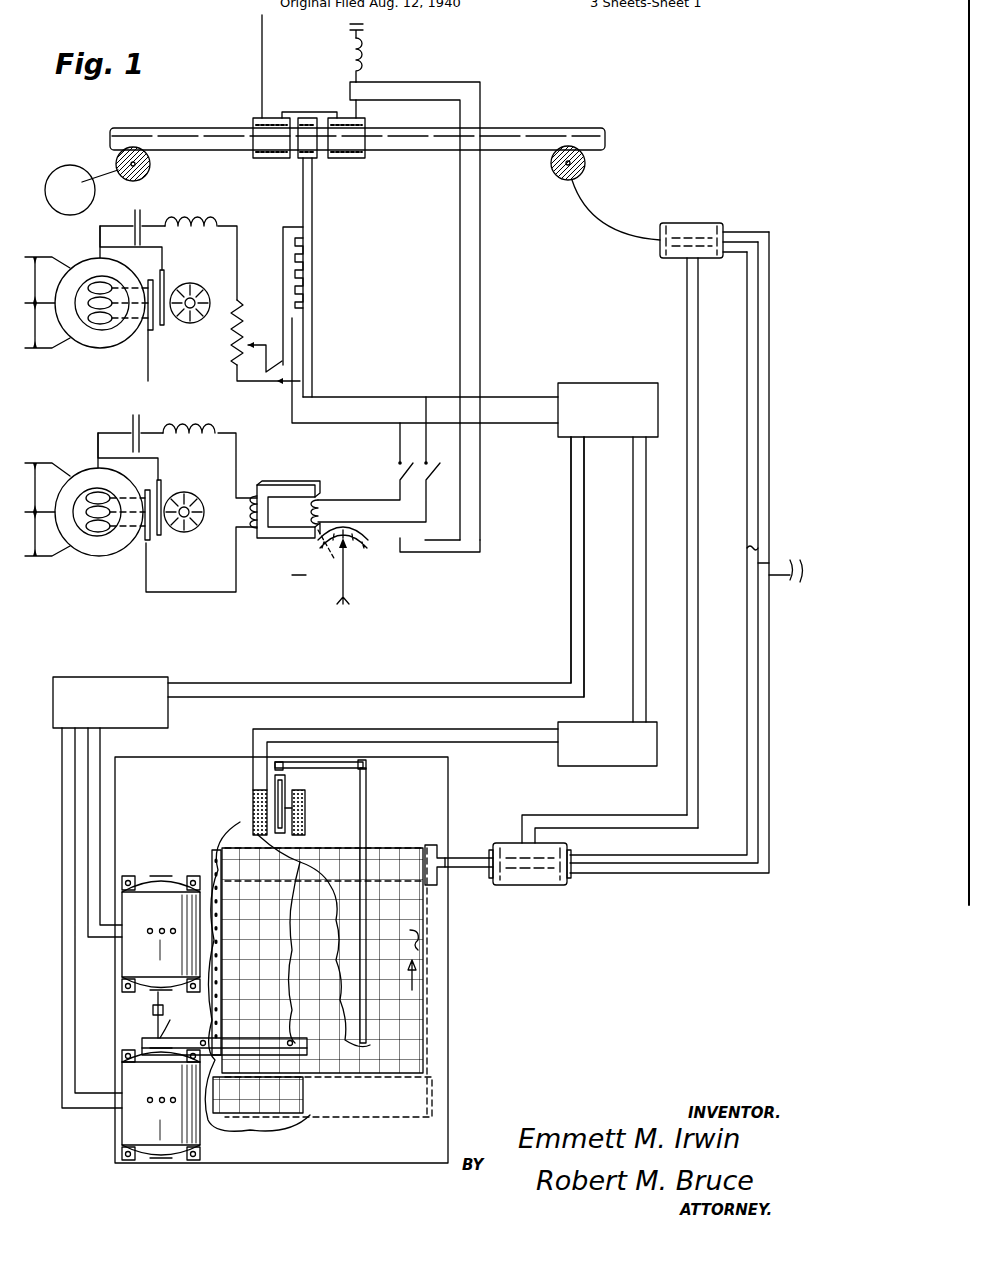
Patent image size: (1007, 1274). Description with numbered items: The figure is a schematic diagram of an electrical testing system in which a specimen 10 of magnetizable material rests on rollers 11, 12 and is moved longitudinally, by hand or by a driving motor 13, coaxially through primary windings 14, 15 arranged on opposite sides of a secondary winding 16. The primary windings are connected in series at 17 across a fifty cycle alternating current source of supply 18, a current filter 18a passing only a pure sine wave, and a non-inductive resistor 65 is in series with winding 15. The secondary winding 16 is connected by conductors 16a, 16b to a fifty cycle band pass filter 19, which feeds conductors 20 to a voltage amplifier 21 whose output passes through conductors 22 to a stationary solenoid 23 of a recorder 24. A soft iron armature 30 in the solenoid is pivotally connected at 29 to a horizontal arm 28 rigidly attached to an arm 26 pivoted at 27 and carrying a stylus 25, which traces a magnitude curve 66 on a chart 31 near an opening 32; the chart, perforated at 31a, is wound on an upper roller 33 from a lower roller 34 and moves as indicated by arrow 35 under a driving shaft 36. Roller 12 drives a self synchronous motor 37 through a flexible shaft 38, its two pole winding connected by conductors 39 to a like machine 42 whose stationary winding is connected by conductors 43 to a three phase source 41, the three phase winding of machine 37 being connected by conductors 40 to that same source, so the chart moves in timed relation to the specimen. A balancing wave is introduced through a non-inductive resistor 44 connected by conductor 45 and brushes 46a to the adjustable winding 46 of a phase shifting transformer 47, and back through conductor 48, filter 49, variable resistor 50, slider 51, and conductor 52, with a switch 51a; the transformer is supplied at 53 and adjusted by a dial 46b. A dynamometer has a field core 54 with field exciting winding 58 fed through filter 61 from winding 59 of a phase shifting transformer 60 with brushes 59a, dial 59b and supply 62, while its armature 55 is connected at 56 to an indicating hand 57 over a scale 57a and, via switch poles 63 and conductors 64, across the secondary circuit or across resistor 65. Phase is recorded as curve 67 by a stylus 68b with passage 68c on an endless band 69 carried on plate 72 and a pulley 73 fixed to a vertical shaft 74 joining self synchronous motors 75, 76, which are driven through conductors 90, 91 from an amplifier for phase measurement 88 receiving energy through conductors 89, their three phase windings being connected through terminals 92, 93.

The specimen 10 is at (536, 130).
The roller 11 is at (146, 170).
The roller 12 is at (584, 168).
The driving motor 13 is at (58, 172).
The primary winding 14 is at (258, 162).
The primary winding 15 is at (360, 160).
The secondary winding 16 is at (318, 160).
The conductor 16a is at (353, 397).
The conductor 16b is at (358, 426).
The series connection 17 is at (318, 112).
The alternating current source of supply 18 is at (356, 24).
The current filter 18a is at (380, 72).
The fifty cycle band pass filter 19 is at (600, 384).
The conductors 20 is at (644, 605).
The voltage amplifier 21 is at (618, 722).
The conductors 22 is at (408, 742).
The stationary solenoid 23 is at (250, 802).
The recorder 24 is at (452, 812).
The stylus or pen 25 is at (405, 1048).
The arm 26 is at (368, 828).
The pivot 27 is at (368, 766).
The horizontal arm 28 is at (342, 770).
The pivotal connection 29 is at (286, 778).
The soft iron armature 30 is at (305, 808).
The record member or chart 31 is at (425, 1012).
The perforations 31a is at (216, 846).
The opening 32 is at (422, 948).
The upper roller 33 is at (440, 850).
The lower roller 34 is at (438, 1108).
The arrow 35 is at (420, 978).
The driving shaft 36 is at (470, 870).
The self synchronous motor 37 is at (690, 226).
The flexible shaft 38 is at (603, 222).
The conductors 39 is at (686, 300).
The leads 40 is at (757, 421).
The three phase alternating current source of supply 41 is at (770, 556).
The self synchronous motor 42 is at (540, 887).
The conductors 43 is at (672, 878).
The non-inductive resistor 44 is at (306, 274).
The conductor 45 is at (160, 386).
The adjustable secondary concentrated two pole winding 46 is at (118, 290).
The brushes 46a is at (164, 276).
The dial 46b is at (206, 326).
The phase shifting transformer 47 is at (80, 352).
The conductor 48 is at (98, 245).
The filter 49 is at (236, 220).
The variable resistor 50 is at (244, 316).
The slider 51 is at (276, 332).
The switch 51a is at (278, 386).
The conductor 52 is at (238, 300).
The three phase supply connection 53 is at (45, 302).
The field core 54 is at (288, 485).
The two pole concentrated winding or armature 55 is at (322, 504).
The connection 56 is at (332, 570).
The indicating hand 57 is at (348, 582).
The scale 57a is at (362, 553).
The field exciting winding 58 is at (254, 516).
The concentrated two pole winding 59 is at (95, 530).
The brushes 59a is at (163, 486).
The dial 59b is at (190, 534).
The phase shifting transformer 60 is at (78, 478).
The filter 61 is at (234, 426).
The alternating current source of supply 62 is at (44, 509).
The poles of two pole two position switch 63 is at (432, 482).
The conductors 64 is at (478, 318).
The non-inductive resistor 65 is at (365, 88).
The curve 66 is at (343, 935).
The curve 67 is at (290, 970).
The sharp pointed stylus 68b is at (200, 1048).
The passage 68c is at (292, 1048).
The endless band 69 is at (176, 1040).
The body member or plate 72 is at (216, 1064).
The larger pulley or roller 73 is at (140, 1042).
The vertical shaft 74 is at (152, 1026).
The self synchronous motor 75 is at (168, 882).
The self synchronous motor 76 is at (130, 1134).
The amplifier for phase measurement 88 is at (130, 676).
The conductors 89 is at (410, 695).
The conductors 90 is at (78, 746).
The conductors 91 is at (62, 984).
The terminals 92 is at (173, 928).
The terminals 93 is at (173, 1104).